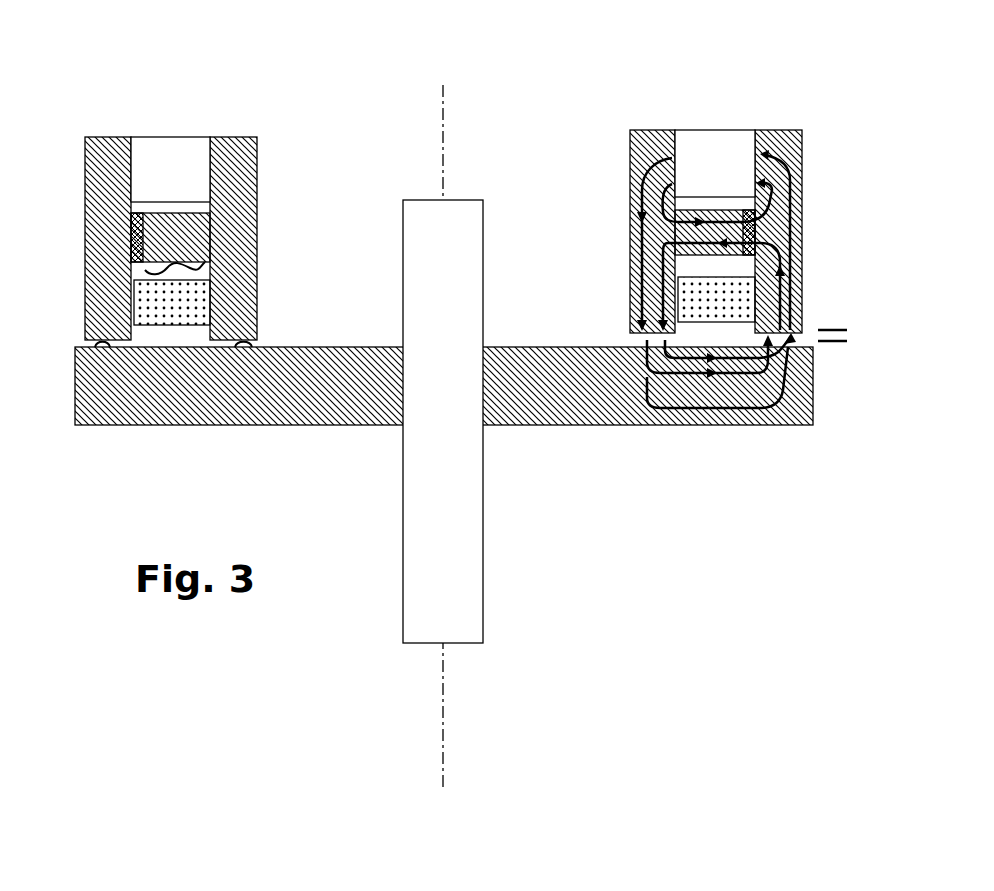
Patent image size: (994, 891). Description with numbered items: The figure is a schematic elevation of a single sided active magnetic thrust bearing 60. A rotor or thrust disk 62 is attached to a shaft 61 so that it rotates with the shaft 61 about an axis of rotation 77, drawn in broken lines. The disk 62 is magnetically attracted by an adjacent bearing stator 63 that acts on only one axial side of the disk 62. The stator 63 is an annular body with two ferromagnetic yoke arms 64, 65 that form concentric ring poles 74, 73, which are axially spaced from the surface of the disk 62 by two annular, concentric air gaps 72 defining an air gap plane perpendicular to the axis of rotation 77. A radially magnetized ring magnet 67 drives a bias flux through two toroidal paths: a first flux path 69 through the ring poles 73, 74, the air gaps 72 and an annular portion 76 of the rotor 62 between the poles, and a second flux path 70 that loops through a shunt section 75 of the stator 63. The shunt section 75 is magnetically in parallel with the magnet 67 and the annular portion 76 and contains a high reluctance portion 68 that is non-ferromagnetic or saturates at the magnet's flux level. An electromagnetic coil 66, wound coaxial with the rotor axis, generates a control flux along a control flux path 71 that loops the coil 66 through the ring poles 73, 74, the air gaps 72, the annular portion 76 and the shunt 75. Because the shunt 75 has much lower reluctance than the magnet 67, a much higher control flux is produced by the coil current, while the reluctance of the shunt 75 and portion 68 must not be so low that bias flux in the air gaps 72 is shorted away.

The single sided active magnetic thrust bearing 60 is at (184, 194).
The shaft 61 is at (469, 200).
The rotor or thrust disk 62 is at (556, 347).
The bearing stator 63 is at (746, 188).
The ferromagnetic yoke arm 64 is at (258, 237).
The ferromagnetic yoke arm 65 is at (85, 190).
The electromagnetic coil 66 is at (212, 268).
The radially magnetized ring magnet 67 is at (178, 137).
The high reluctance portion 68 is at (135, 268).
The first flux path 69 is at (802, 178).
The second flux path 70 is at (802, 210).
The control flux path 71 is at (802, 287).
The air gaps 72 is at (855, 333).
The ring pole 73 is at (95, 347).
The ring pole 74 is at (252, 347).
The shunt section 75 is at (177, 230).
The annular portion of the rotor 76 is at (697, 408).
The axis of rotation 77 is at (443, 114).